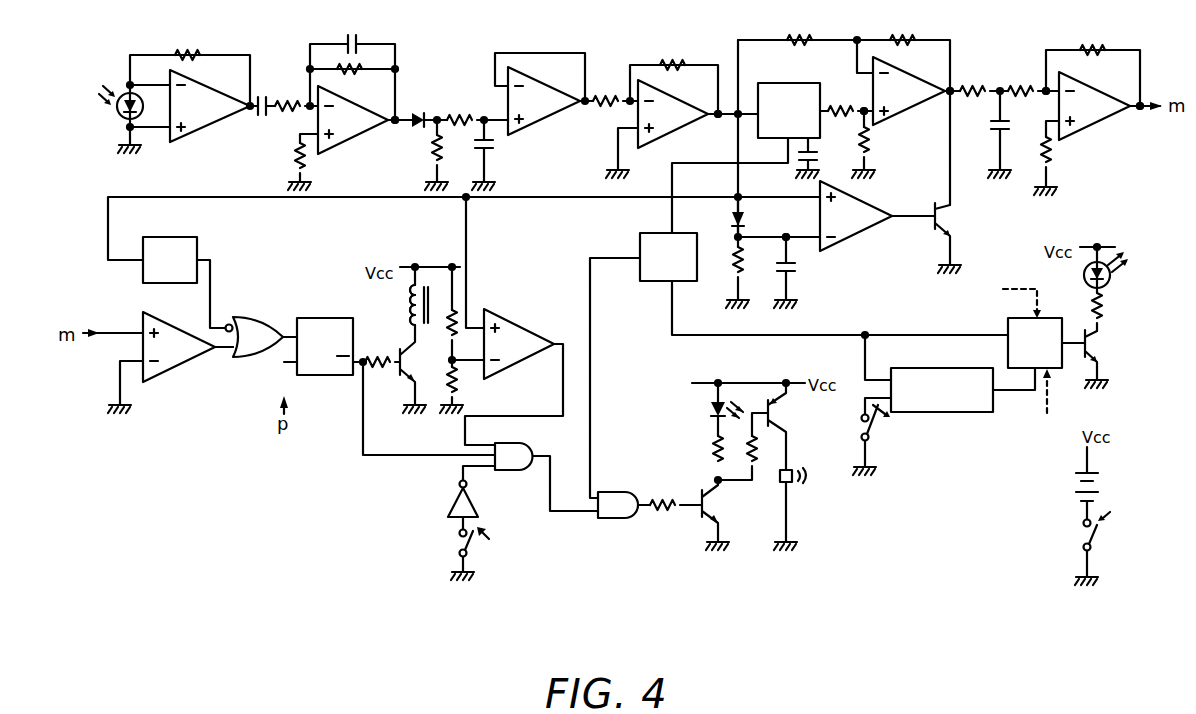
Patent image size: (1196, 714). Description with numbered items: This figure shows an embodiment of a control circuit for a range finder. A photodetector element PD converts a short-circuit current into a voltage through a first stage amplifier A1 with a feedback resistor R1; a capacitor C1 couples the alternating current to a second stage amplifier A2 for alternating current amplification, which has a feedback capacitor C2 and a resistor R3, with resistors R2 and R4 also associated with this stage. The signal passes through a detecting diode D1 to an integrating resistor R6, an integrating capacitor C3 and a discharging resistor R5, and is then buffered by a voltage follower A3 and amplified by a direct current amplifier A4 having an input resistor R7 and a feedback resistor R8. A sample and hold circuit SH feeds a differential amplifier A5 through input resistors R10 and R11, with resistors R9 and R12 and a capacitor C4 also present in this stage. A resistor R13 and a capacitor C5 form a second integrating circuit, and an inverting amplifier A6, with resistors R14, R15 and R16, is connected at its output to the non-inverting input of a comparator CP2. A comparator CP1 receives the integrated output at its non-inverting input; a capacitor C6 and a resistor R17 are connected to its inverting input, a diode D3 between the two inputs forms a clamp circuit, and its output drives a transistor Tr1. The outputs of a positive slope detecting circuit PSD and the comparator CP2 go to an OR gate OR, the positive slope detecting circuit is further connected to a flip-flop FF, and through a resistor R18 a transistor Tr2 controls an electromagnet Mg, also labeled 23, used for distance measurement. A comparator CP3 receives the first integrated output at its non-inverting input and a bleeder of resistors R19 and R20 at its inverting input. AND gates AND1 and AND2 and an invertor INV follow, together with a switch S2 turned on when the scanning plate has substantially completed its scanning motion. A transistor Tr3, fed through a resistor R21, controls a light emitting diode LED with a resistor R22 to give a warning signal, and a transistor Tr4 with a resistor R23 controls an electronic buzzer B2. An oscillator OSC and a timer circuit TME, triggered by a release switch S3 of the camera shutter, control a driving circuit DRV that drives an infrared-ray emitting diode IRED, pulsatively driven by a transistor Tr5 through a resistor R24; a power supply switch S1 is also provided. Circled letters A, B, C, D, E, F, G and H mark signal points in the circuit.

The photodetector element PD is at (115, 108).
The feedback resistor R1 is at (190, 67).
The resistor R2 is at (286, 95).
The resistor R3 is at (352, 92).
The resistor R4 is at (292, 162).
The discharging resistor R5 is at (447, 155).
The integrating resistor R6 is at (460, 109).
The input resistor R7 is at (605, 88).
The feedback resistor R8 is at (674, 75).
The resistor R9 is at (874, 144).
The input resistor R10 is at (797, 29).
The input resistor R11 is at (843, 121).
The resistor R12 is at (903, 51).
The resistor R13 is at (975, 101).
The resistor R14 is at (1025, 102).
The resistor R15 is at (1093, 64).
The resistor R16 is at (1061, 158).
The resistor R17 is at (723, 272).
The resistor R18 is at (375, 351).
The resistor R19 is at (437, 329).
The resistor R20 is at (467, 386).
The resistor R21 is at (665, 517).
The resistor R22 is at (694, 449).
The resistor R23 is at (762, 450).
The resistor R24 is at (1115, 307).
The capacitor C1 is at (259, 116).
The feedback capacitor C2 is at (352, 42).
The integrating capacitor C3 is at (496, 155).
The capacitor C4 is at (819, 158).
The capacitor C5 is at (987, 134).
The capacitor C6 is at (773, 272).
The first stage amplifier A1 is at (210, 106).
The second stage amplifier A2 is at (353, 120).
The voltage follower A3 is at (540, 94).
The direct current amplifier A4 is at (673, 114).
The differential amplifier A5 is at (909, 91).
The inverting amplifier A6 is at (1094, 106).
The detecting diode D1 is at (414, 109).
The diode D3 is at (752, 217).
The signal point A is at (395, 122).
The electronic buzzer B is at (718, 117).
The signal point C is at (809, 243).
The signal point D is at (862, 109).
The signal point E is at (952, 88).
The signal point F is at (1044, 88).
The signal point G is at (1139, 109).
The signal point H is at (221, 351).
The sample and hold circuit SH is at (789, 110).
The positive slope detecting circuit PSD is at (170, 260).
The OR gate OR is at (255, 337).
The comparator CP1 is at (856, 216).
The comparator CP2 is at (179, 347).
The comparator CP3 is at (519, 344).
The flip-flop FF is at (325, 346).
The transistor Tr1 is at (957, 238).
The transistor Tr2 is at (402, 371).
The transistor Tr3 is at (721, 515).
The transistor Tr4 is at (791, 426).
The transistor Tr5 is at (1106, 359).
The electromagnet Mg is at (402, 305).
The magnet 23 is at (392, 308).
The AND gate AND1 is at (501, 444).
The AND gate AND2 is at (604, 492).
The invertor INV is at (449, 511).
The oscillator OSC is at (668, 257).
The light emitting diode LED is at (704, 413).
The electronic buzzer B2 is at (792, 483).
The timer circuit TME is at (942, 390).
The driving circuit DRV is at (1016, 328).
The infrared-ray emitting diode IRED is at (1119, 273).
The power supply switch S1 is at (1097, 529).
The switch S2 is at (756, 474).
The release switch S3 is at (874, 440).